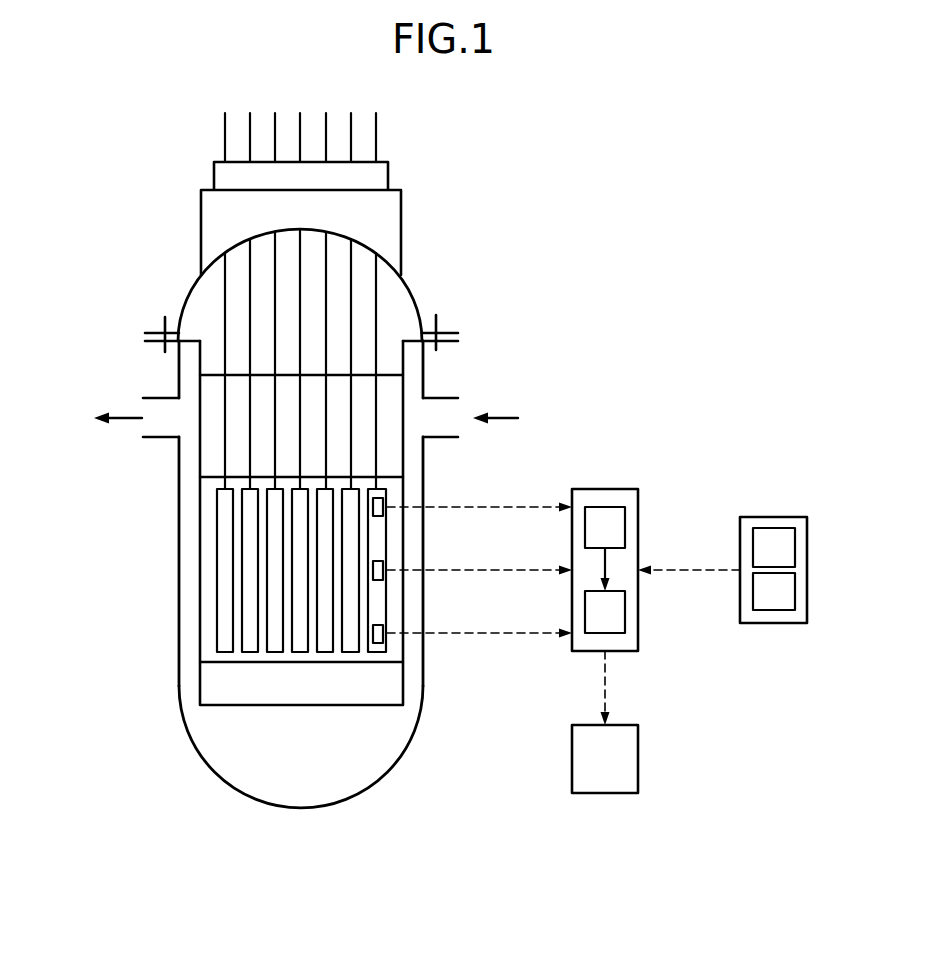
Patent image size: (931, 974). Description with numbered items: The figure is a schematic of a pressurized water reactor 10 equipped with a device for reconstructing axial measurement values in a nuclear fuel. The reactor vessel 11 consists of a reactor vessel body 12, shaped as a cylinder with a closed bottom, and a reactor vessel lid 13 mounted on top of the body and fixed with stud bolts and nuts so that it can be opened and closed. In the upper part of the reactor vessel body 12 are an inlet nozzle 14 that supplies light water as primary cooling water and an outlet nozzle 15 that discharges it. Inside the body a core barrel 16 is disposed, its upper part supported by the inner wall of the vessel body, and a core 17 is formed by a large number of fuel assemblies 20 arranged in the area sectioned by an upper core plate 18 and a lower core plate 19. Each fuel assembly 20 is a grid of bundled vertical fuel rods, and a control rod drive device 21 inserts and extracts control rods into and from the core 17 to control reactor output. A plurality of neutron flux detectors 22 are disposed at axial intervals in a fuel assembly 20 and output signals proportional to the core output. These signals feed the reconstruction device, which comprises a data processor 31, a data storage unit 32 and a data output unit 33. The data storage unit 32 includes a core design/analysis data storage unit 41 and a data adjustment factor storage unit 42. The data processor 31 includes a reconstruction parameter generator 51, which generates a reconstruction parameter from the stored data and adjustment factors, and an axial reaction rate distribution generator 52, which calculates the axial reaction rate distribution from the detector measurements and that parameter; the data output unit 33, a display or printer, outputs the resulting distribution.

The pressurized water reactor 10 is at (105, 213).
The reactor vessel 11 is at (167, 577).
The reactor vessel body 12 is at (185, 729).
The reactor vessel lid 13 is at (412, 290).
The inlet nozzle 14 is at (452, 398).
The outlet nozzle 15 is at (160, 438).
The core barrel 16 is at (198, 624).
The core 17 is at (205, 525).
The upper core plate 18 is at (362, 470).
The lower core plate 19 is at (374, 648).
The fuel assembly 20 is at (252, 640).
The control rod drive device 21 is at (388, 213).
The neutron flux detector 22 is at (382, 513).
The data processor 31 is at (603, 468).
The data storage unit 32 is at (771, 497).
The data output unit 33 is at (626, 705).
The core design/analysis data storage unit 41 is at (795, 547).
The data adjustment factor storage unit 42 is at (795, 590).
The reconstruction parameter generator 51 is at (625, 525).
The axial reaction rate distribution generator 52 is at (625, 610).